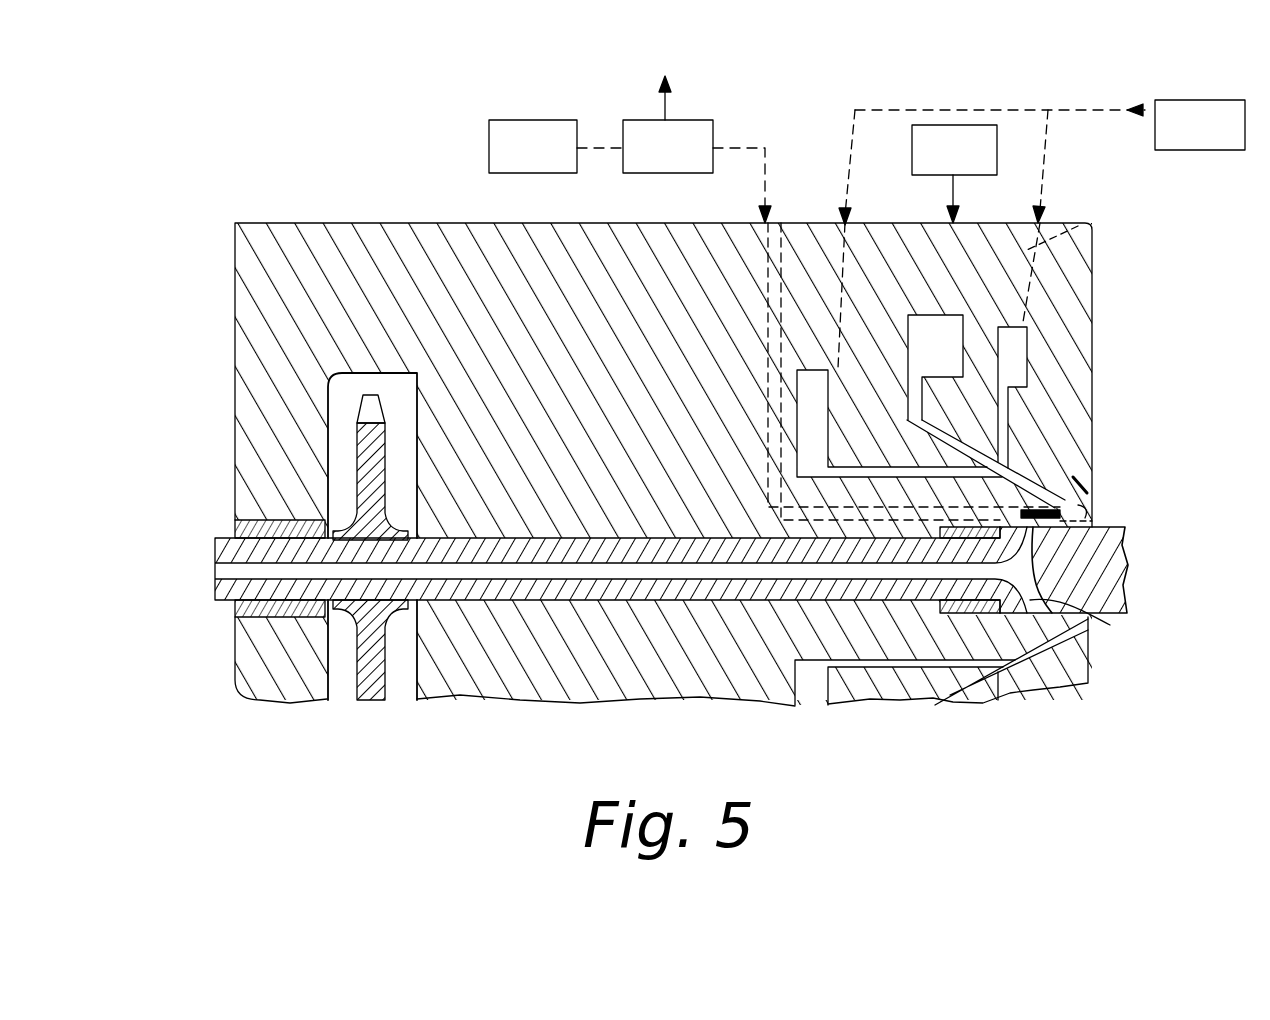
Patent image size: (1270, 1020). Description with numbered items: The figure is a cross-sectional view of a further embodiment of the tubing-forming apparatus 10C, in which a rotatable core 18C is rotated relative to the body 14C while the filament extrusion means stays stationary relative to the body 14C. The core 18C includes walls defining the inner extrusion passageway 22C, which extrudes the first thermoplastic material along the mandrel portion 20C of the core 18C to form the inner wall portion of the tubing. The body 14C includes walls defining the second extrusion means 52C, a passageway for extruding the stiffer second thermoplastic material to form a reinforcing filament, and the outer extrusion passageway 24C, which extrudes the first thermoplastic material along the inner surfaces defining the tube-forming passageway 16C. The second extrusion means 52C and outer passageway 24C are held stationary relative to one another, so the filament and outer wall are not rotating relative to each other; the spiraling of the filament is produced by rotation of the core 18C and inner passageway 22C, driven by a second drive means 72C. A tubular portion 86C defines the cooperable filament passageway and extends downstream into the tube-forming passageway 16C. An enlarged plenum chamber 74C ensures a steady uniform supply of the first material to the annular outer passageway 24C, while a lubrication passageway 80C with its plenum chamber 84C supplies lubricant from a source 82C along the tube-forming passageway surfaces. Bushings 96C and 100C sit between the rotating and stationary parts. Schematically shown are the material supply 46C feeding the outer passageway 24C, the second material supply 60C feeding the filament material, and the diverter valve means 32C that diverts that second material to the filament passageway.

The apparatus 10C is at (388, 150).
The body 14C is at (305, 222).
The rotatable core 18C is at (232, 552).
The bushing 96C is at (235, 610).
The second drive means 72C is at (350, 675).
The lubricant source / lubrication plenum chamber 82C is at (812, 400).
The plenum chamber 74C is at (935, 318).
The plenum chamber 84C is at (1015, 348).
The outer extrusion passageway 24C is at (967, 450).
The second extrusion means 52C is at (1077, 480).
The tubular portion 86C is at (1067, 497).
The tube-forming passageway 16C is at (1087, 515).
The mandrel portion 20C is at (1112, 565).
The inner extrusion passageway 22C is at (1110, 625).
The bushing 100C is at (942, 605).
The lubrication passageway 80C is at (1078, 225).
The second material supply 60C is at (533, 146).
The valve means 32C is at (818, 298).
The material supply 46C is at (980, 216).